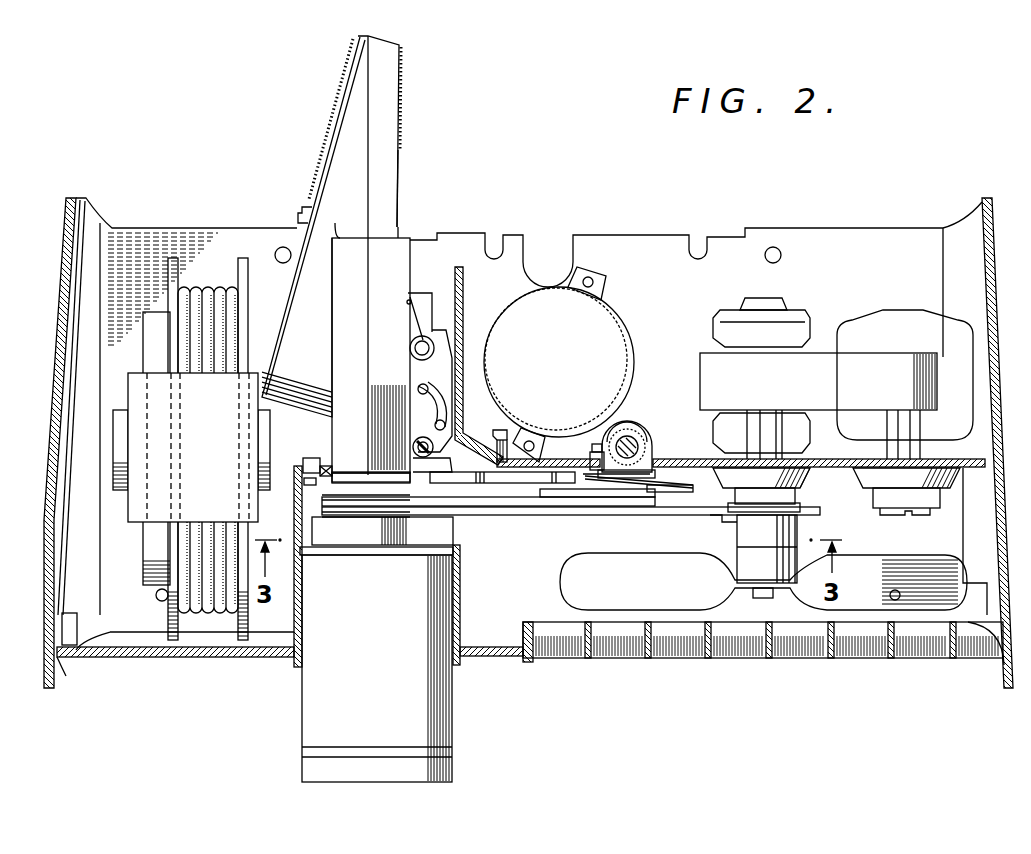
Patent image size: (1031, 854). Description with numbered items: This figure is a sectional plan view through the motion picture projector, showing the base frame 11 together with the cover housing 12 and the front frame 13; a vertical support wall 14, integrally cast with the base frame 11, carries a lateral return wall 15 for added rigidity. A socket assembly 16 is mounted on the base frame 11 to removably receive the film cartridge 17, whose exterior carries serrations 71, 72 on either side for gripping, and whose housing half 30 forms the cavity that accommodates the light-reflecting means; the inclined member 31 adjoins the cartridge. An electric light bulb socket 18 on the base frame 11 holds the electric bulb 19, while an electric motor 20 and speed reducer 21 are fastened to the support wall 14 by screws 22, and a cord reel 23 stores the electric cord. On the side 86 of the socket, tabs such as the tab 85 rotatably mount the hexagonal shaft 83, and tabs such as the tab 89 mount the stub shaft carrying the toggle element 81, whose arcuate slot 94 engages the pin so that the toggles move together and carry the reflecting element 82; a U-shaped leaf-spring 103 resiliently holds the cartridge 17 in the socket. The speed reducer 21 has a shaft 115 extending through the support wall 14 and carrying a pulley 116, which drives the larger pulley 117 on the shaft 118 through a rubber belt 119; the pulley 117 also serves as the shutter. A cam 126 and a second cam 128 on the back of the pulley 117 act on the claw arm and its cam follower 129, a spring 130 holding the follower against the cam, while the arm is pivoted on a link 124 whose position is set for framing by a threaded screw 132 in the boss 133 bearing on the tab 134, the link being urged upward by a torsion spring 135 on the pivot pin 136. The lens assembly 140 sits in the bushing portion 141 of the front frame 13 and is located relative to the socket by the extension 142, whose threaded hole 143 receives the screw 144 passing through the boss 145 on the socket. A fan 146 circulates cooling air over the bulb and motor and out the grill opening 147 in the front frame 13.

The base frame 11 is at (845, 234).
The cover housing 12 is at (64, 248).
The front frame 13 is at (238, 659).
The vertical support wall 14 is at (976, 459).
The lateral return wall 15 is at (465, 283).
The socket assembly 16 is at (413, 237).
The film cartridge 17 is at (408, 160).
The electric light bulb socket 18 is at (603, 280).
The electric bulb 19 is at (630, 330).
The electric motor 20 is at (900, 311).
The speed reducer 21 is at (803, 315).
The screws 22 is at (793, 502).
The cord reel 23 is at (138, 532).
The housing half 30 is at (406, 182).
The inclined arm 31 is at (316, 164).
The serrations 71 is at (405, 88).
The serrations 72 is at (352, 56).
The toggle element 81 is at (413, 383).
The reflecting element 82 is at (413, 300).
The hexagonal shaft 83 is at (413, 447).
The tab 85 is at (415, 460).
The side of socket 86 is at (413, 421).
The tab 89 is at (415, 347).
The arcuate slot 94 is at (418, 404).
The leaf-spring 103 is at (401, 302).
The shaft 115 is at (755, 598).
The pulley 116 is at (712, 518).
The pulley 117 is at (613, 518).
The shaft 118 is at (499, 440).
The rubber belt 119 is at (692, 513).
The link 124 is at (677, 475).
The cam 126 is at (512, 494).
The second cam 128 is at (583, 502).
The cam follower 129 is at (400, 477).
The spring 130 is at (630, 480).
The threaded screw 132 is at (654, 446).
The boss 133 is at (605, 448).
The tab 134 is at (640, 433).
The torsion spring 135 is at (572, 453).
The pivot pin 136 is at (598, 444).
The lens assembly 140 is at (294, 709).
The bushing portion 141 is at (456, 588).
The extension 142 is at (293, 503).
The threaded hole 143 is at (317, 494).
The screw 144 is at (326, 460).
The boss 145 is at (302, 473).
The fan 146 is at (573, 568).
The grill opening 147 is at (752, 646).